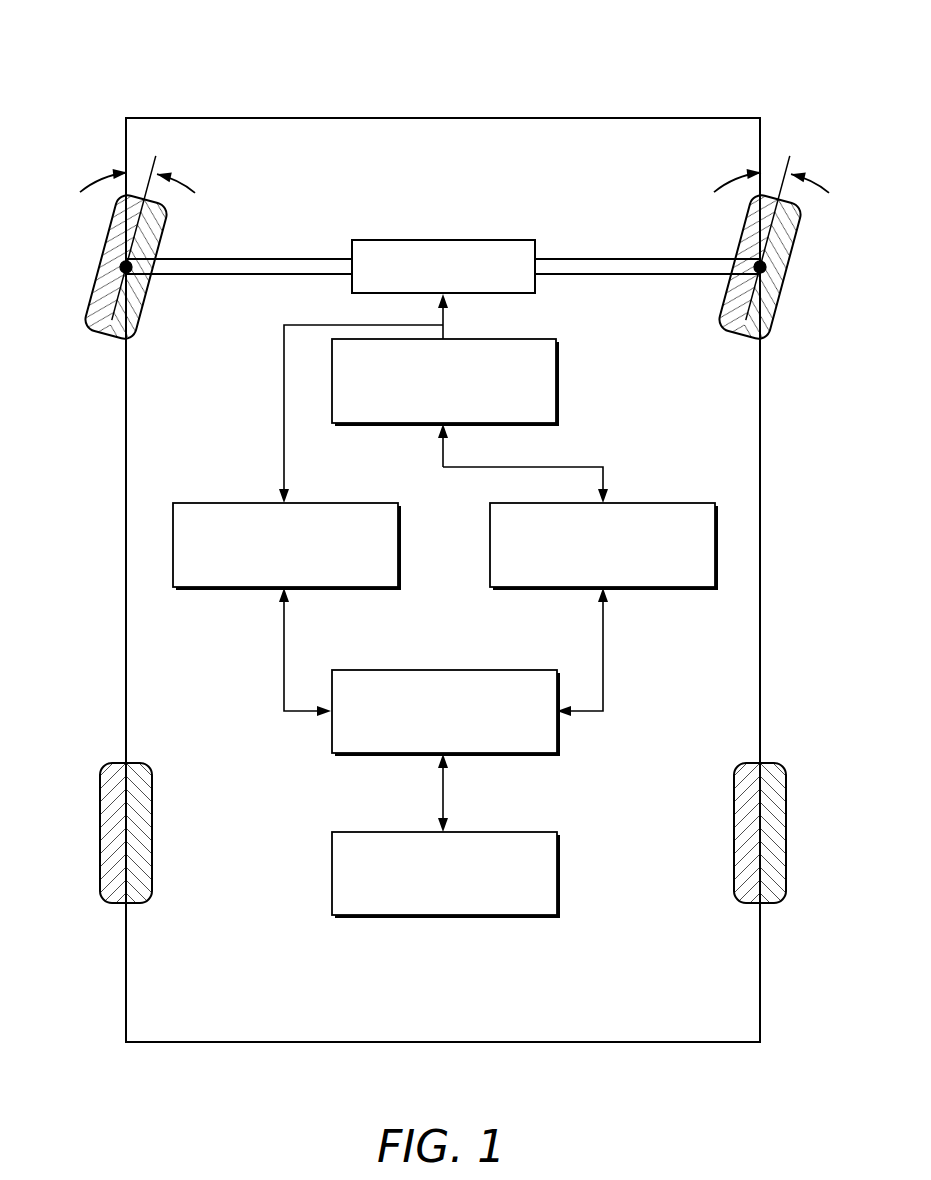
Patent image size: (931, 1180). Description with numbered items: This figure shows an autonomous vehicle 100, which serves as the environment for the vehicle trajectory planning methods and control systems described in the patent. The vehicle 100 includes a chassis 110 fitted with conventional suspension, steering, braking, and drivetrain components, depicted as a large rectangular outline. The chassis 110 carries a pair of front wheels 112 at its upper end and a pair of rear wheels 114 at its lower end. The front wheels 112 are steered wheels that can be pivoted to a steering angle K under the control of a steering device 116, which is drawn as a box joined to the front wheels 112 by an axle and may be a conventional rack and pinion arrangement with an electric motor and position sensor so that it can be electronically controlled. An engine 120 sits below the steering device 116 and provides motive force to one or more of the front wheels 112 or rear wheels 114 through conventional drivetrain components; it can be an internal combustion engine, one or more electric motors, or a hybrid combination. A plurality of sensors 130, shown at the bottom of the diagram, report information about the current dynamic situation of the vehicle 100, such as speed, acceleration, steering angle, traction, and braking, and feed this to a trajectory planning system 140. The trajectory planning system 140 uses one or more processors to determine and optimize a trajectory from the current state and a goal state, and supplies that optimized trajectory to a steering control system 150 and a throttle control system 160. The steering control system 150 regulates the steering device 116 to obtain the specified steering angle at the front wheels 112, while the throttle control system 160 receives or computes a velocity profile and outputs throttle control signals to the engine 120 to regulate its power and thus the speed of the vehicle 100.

The vehicle 100 is at (101, 45).
The chassis 110 is at (699, 117).
The front wheels 112 is at (98, 267).
The rear wheels 114 is at (99, 833).
The steering device 116 is at (480, 238).
The engine 120 is at (540, 338).
The sensors 130 is at (510, 832).
The trajectory planning system 140 is at (481, 670).
The steering control system 150 is at (335, 503).
The throttle control system 160 is at (672, 503).